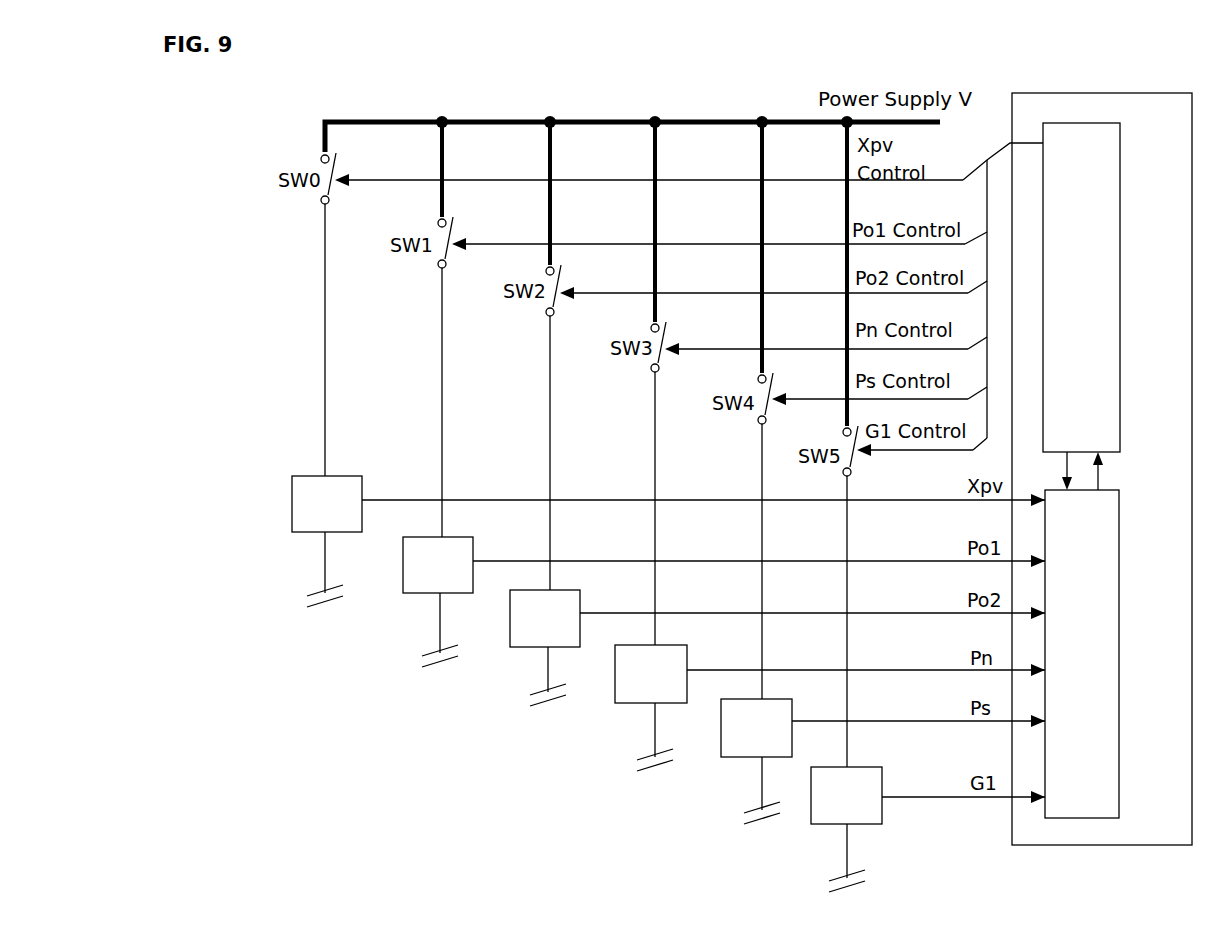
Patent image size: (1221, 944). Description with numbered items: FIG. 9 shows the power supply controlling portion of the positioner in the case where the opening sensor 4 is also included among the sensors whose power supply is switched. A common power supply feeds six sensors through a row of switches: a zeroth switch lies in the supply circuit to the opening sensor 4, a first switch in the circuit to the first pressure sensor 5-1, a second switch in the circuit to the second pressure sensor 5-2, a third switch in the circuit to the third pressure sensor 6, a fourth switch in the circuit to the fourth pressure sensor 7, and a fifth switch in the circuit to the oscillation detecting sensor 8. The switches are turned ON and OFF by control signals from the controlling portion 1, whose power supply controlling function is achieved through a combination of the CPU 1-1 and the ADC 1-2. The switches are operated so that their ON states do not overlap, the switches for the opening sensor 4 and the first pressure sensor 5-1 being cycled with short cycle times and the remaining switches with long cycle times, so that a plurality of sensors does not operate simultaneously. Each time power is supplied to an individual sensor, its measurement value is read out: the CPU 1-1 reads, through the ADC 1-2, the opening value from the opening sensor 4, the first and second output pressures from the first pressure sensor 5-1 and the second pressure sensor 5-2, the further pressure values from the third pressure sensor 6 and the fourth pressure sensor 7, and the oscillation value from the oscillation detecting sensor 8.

The controlling portion 1 is at (1192, 135).
The CPU 1-1 is at (1122, 237).
The ADC 1-2 is at (1122, 547).
The opening sensor 4 is at (357, 497).
The first pressure sensor 5-1 is at (468, 550).
The second pressure sensor 5-2 is at (570, 610).
The third pressure sensor 6 is at (675, 662).
The fourth pressure sensor 7 is at (780, 720).
The oscillation detecting sensor 8 is at (880, 770).